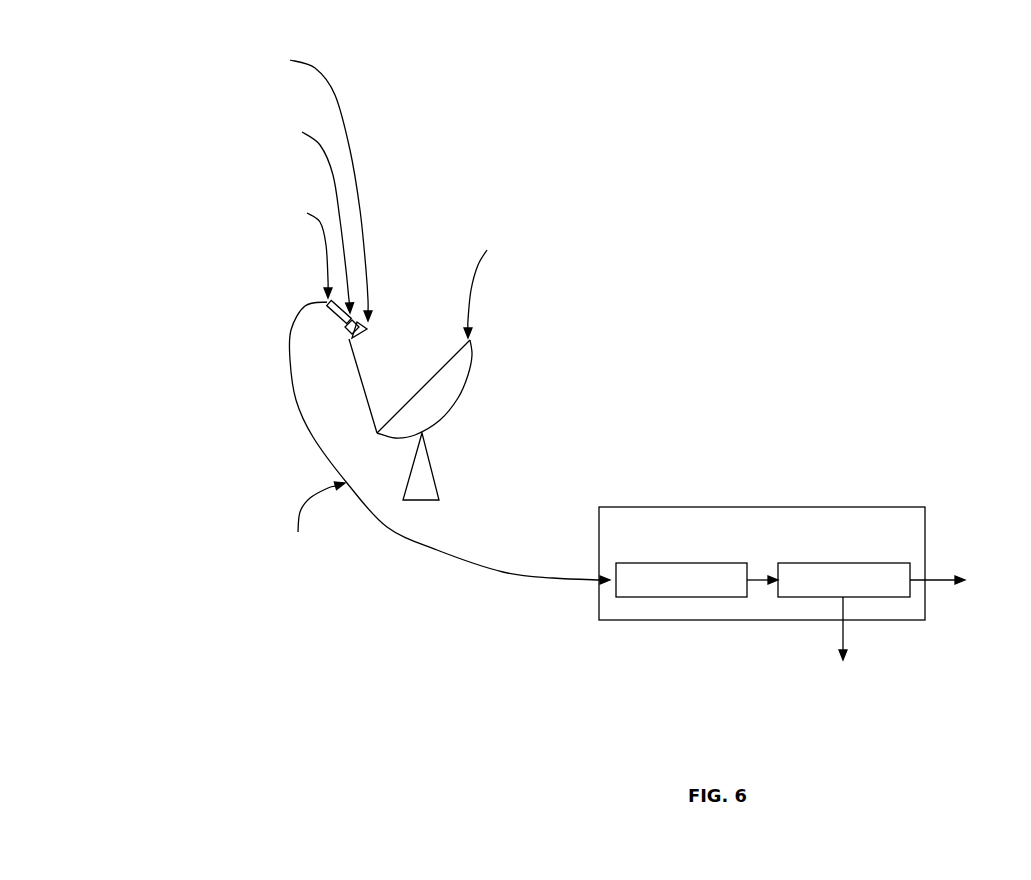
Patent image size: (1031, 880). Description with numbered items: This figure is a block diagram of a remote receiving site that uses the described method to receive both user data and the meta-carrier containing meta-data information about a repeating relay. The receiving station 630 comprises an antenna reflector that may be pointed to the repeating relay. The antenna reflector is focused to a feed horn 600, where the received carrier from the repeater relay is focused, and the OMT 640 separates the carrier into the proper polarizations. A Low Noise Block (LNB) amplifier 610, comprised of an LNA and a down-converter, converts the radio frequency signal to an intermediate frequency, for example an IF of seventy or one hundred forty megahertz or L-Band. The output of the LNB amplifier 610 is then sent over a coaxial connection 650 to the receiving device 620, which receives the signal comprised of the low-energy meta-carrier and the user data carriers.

The feed horn 600 is at (285, 33).
The Low Noise Block (LNB) amplifier 610 is at (165, 230).
The receiving device 620 is at (670, 622).
The receiving station 630 is at (668, 378).
The OMT 640 is at (242, 123).
The coaxial connection 650 is at (252, 548).